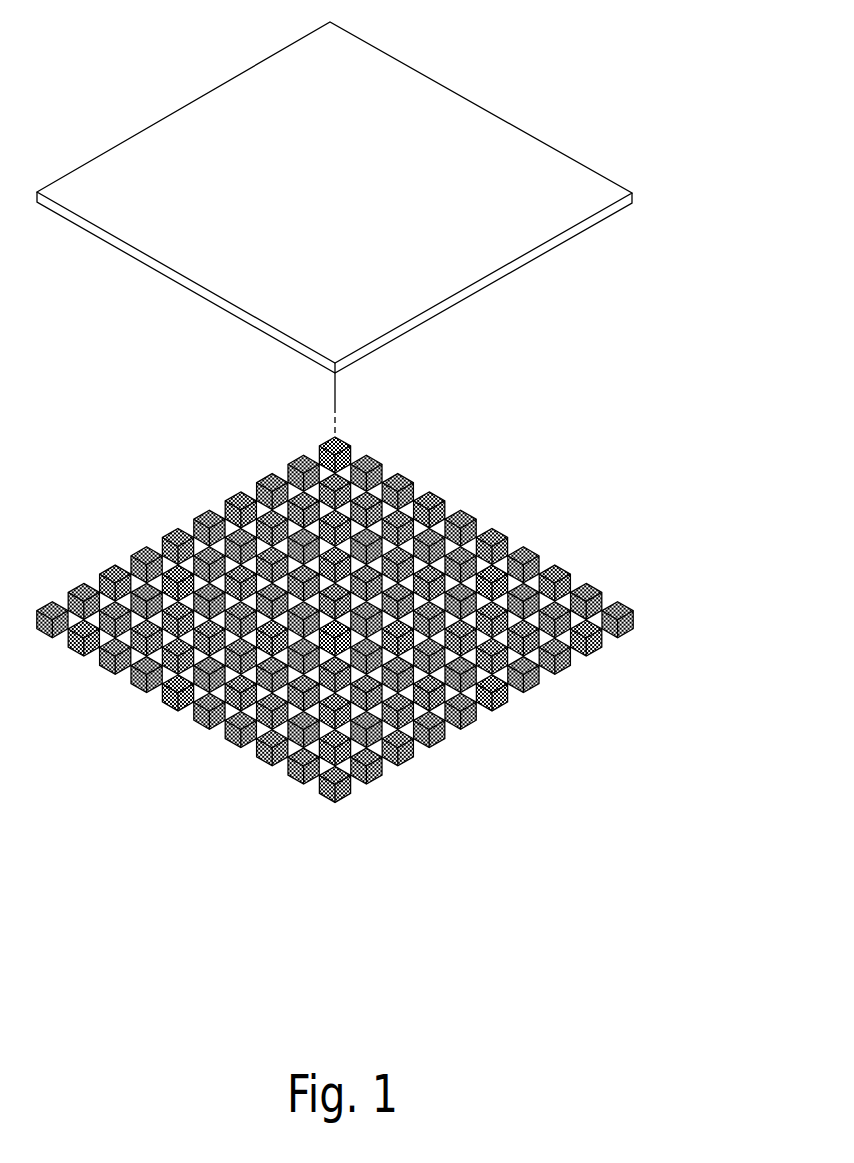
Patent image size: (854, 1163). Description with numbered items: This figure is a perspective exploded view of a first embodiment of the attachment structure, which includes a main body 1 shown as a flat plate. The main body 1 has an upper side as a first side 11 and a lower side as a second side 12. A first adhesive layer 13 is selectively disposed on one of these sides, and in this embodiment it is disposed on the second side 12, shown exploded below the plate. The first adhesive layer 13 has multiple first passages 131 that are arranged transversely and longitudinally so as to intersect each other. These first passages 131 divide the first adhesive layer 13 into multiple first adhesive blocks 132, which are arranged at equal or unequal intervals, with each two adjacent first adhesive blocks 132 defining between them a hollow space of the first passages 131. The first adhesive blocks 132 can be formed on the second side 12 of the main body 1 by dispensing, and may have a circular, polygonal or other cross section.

The main body 1 is at (397, 197).
The first side 11 is at (563, 180).
The second side 12 is at (600, 221).
The first adhesive layer 13 is at (392, 619).
The first passages 131 is at (496, 563).
The first adhesive blocks 132 is at (463, 511).